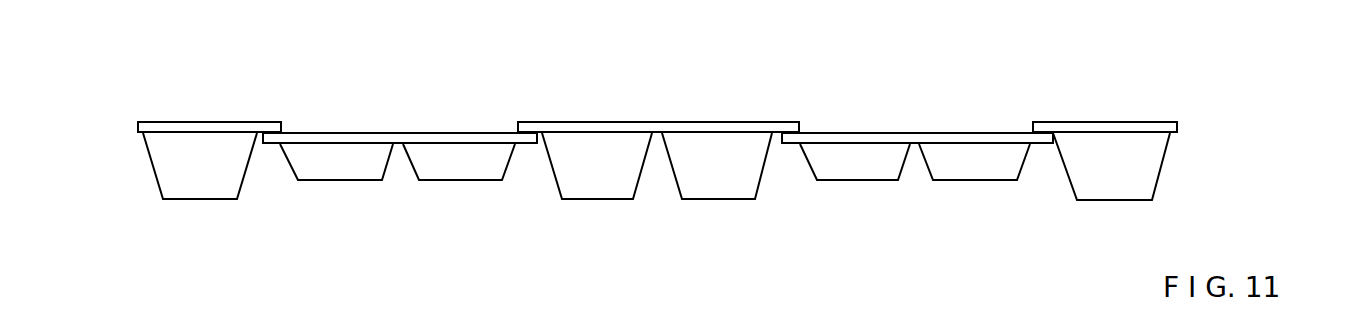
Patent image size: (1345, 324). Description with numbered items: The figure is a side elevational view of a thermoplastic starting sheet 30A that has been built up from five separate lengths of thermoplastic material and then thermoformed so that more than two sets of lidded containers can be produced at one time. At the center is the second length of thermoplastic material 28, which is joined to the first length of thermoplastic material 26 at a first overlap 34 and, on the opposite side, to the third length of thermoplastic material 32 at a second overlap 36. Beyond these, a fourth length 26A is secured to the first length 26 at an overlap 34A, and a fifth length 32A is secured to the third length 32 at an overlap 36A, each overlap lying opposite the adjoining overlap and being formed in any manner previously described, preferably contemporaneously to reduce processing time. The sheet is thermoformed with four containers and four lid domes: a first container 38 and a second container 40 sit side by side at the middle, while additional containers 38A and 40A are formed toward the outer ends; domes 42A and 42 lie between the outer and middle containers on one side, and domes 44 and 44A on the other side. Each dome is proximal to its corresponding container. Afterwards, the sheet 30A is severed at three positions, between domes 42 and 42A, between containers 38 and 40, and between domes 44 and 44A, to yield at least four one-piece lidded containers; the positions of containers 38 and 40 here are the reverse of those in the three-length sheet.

The starting sheet 30A is at (870, 73).
The fourth length of thermoplastic material 26A is at (175, 122).
The first length of thermoplastic material 26 is at (400, 133).
The second length of thermoplastic material 28 is at (655, 122).
The third length of thermoplastic material 32 is at (915, 133).
The fifth length of thermoplastic material 32A is at (1138, 122).
The overlap 34A is at (283, 110).
The first overlap 34 is at (545, 110).
The second overlap 36 is at (802, 110).
The overlap 36A is at (1062, 110).
The additional container 38A is at (177, 199).
The first container 38 is at (582, 199).
The second container 40 is at (730, 199).
The additional container 40A is at (1132, 200).
The additional dome 42A is at (327, 180).
The first corresponding dome 42 is at (462, 180).
The second corresponding dome 44 is at (853, 180).
The additional dome 44A is at (983, 180).